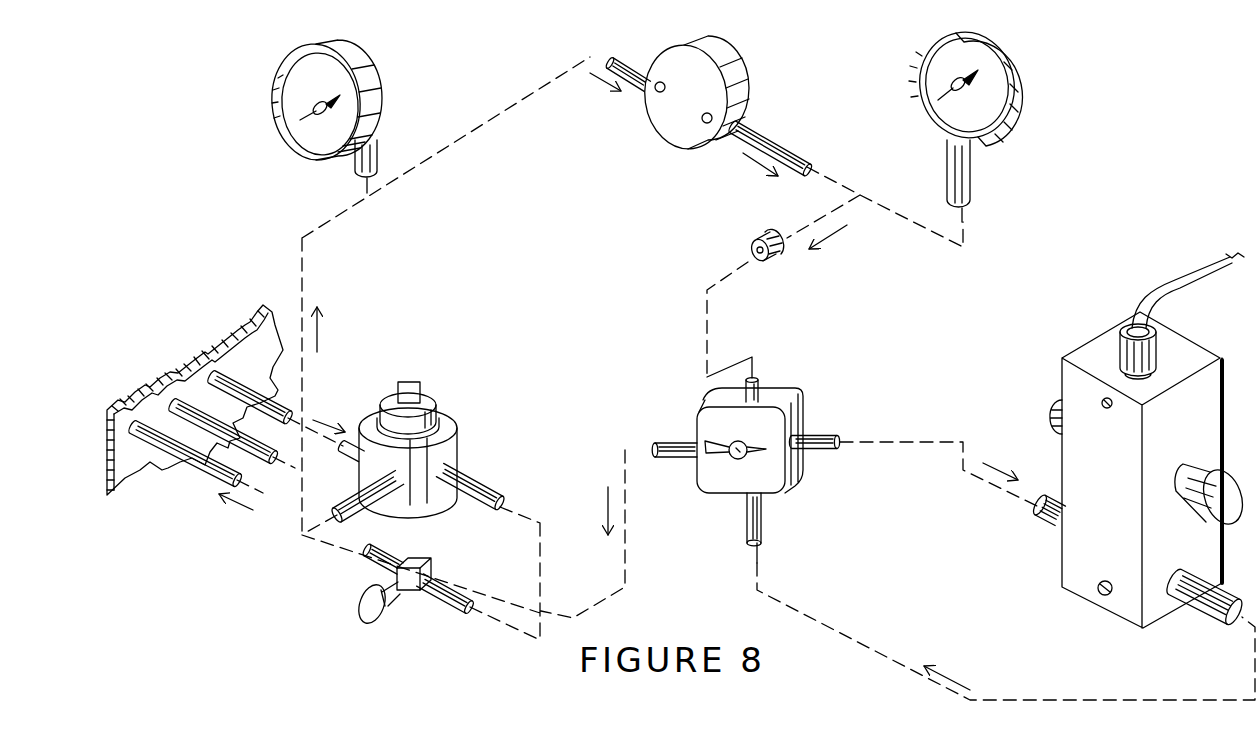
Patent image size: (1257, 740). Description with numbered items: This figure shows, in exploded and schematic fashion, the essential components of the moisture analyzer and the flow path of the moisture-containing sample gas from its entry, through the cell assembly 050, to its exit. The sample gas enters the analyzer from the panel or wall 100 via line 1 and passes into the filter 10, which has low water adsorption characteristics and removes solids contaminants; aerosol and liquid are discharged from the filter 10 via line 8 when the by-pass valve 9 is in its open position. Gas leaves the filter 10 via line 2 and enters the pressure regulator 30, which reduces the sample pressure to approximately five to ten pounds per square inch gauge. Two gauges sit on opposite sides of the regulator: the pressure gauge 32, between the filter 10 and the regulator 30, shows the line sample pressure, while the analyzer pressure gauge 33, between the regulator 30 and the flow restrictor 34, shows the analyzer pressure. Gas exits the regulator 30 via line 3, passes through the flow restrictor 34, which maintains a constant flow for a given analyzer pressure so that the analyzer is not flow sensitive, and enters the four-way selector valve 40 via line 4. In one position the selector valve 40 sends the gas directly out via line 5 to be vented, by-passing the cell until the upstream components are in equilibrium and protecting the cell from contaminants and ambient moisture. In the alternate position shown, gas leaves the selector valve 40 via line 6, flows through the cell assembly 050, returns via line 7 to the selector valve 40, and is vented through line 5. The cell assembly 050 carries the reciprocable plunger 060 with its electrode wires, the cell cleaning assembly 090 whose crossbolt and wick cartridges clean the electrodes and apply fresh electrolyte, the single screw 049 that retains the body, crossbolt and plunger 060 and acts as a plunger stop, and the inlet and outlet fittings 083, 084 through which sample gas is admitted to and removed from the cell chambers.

The wall 100 is at (186, 358).
The line 1 is at (233, 383).
The line 5 is at (181, 406).
The line 8 is at (168, 452).
The line 2 is at (302, 275).
The pressure gauge 32 is at (366, 60).
The pressure regulator 30 is at (733, 49).
The line 3 is at (790, 150).
The analyzer pressure gauge 33 is at (1011, 58).
The flow restrictor 34 is at (775, 262).
The line 4 is at (710, 283).
The selector valve 40 is at (806, 388).
The line 6 is at (823, 435).
The line 7 is at (762, 524).
The filter 10 is at (458, 408).
The by-pass valve 9 is at (417, 591).
The cell assembly 050 is at (1228, 388).
The plunger 060 is at (1161, 343).
The screw 049 is at (1104, 404).
The fitting 083 is at (1050, 523).
The cell cleaning assembly 090 is at (1190, 514).
The fitting 084 is at (1193, 617).